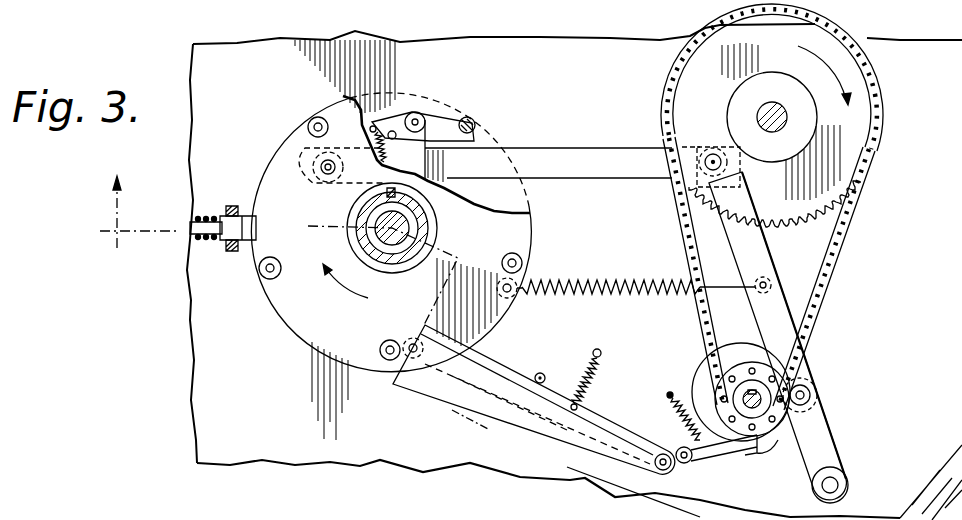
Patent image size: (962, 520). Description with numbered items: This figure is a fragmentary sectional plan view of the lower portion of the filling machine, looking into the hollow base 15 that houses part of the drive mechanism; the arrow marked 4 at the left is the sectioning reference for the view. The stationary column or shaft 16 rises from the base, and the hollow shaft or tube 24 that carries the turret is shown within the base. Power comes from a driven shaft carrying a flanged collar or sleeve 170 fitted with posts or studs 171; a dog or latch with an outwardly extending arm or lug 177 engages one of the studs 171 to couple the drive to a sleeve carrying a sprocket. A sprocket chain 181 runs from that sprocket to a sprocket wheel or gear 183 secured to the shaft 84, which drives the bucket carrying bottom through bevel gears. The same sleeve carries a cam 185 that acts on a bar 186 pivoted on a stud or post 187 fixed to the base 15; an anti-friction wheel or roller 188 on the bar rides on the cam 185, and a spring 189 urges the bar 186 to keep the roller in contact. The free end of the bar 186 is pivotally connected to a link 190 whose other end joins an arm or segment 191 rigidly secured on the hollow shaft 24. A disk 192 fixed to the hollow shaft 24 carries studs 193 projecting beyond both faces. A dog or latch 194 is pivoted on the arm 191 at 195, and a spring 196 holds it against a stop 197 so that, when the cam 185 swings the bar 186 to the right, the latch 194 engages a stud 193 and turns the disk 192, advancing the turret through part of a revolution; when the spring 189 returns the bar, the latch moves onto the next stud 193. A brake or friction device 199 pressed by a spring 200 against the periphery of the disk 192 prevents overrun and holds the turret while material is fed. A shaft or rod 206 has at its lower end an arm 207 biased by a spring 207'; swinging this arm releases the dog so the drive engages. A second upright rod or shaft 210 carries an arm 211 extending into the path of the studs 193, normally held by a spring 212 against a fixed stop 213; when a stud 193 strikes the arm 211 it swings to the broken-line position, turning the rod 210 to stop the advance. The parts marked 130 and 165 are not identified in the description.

The section line indicator 4 is at (120, 212).
The base 15 is at (193, 410).
The stationary column or shaft 16 is at (386, 230).
The hollow shaft or tube 24 is at (388, 263).
The shaft 84 is at (772, 104).
The arm 130 is at (795, 420).
The hub flange 165 is at (752, 399).
The flanged collar or sleeve 170 is at (767, 367).
The posts or studs 171 is at (780, 371).
The arm or lug 177 is at (758, 453).
The sprocket chain 181 is at (846, 248).
The sprocket wheel or gear 183 is at (878, 126).
The cam 185 is at (702, 362).
The bar 186 is at (760, 248).
The stud or post 187 is at (850, 484).
The anti-friction wheel or roller 188 is at (817, 388).
The spring 189 is at (630, 258).
The link 190 is at (577, 174).
The arm or segment 191 is at (322, 199).
The disk 192 is at (532, 212).
The studs 193 is at (316, 117).
The dog or latch 194 is at (457, 110).
The pivot 195 is at (419, 114).
The spring 196 is at (462, 185).
The stop 197 is at (562, 151).
The brake or friction device 199 is at (256, 230).
The spring 200 is at (200, 260).
The shaft or rod 206 is at (683, 464).
The arm 207 is at (738, 474).
The spring 207' is at (654, 416).
The second upright rod or shaft 210 is at (655, 465).
The arm 211 is at (583, 412).
The spring 212 is at (600, 374).
The fixed stop 213 is at (560, 357).